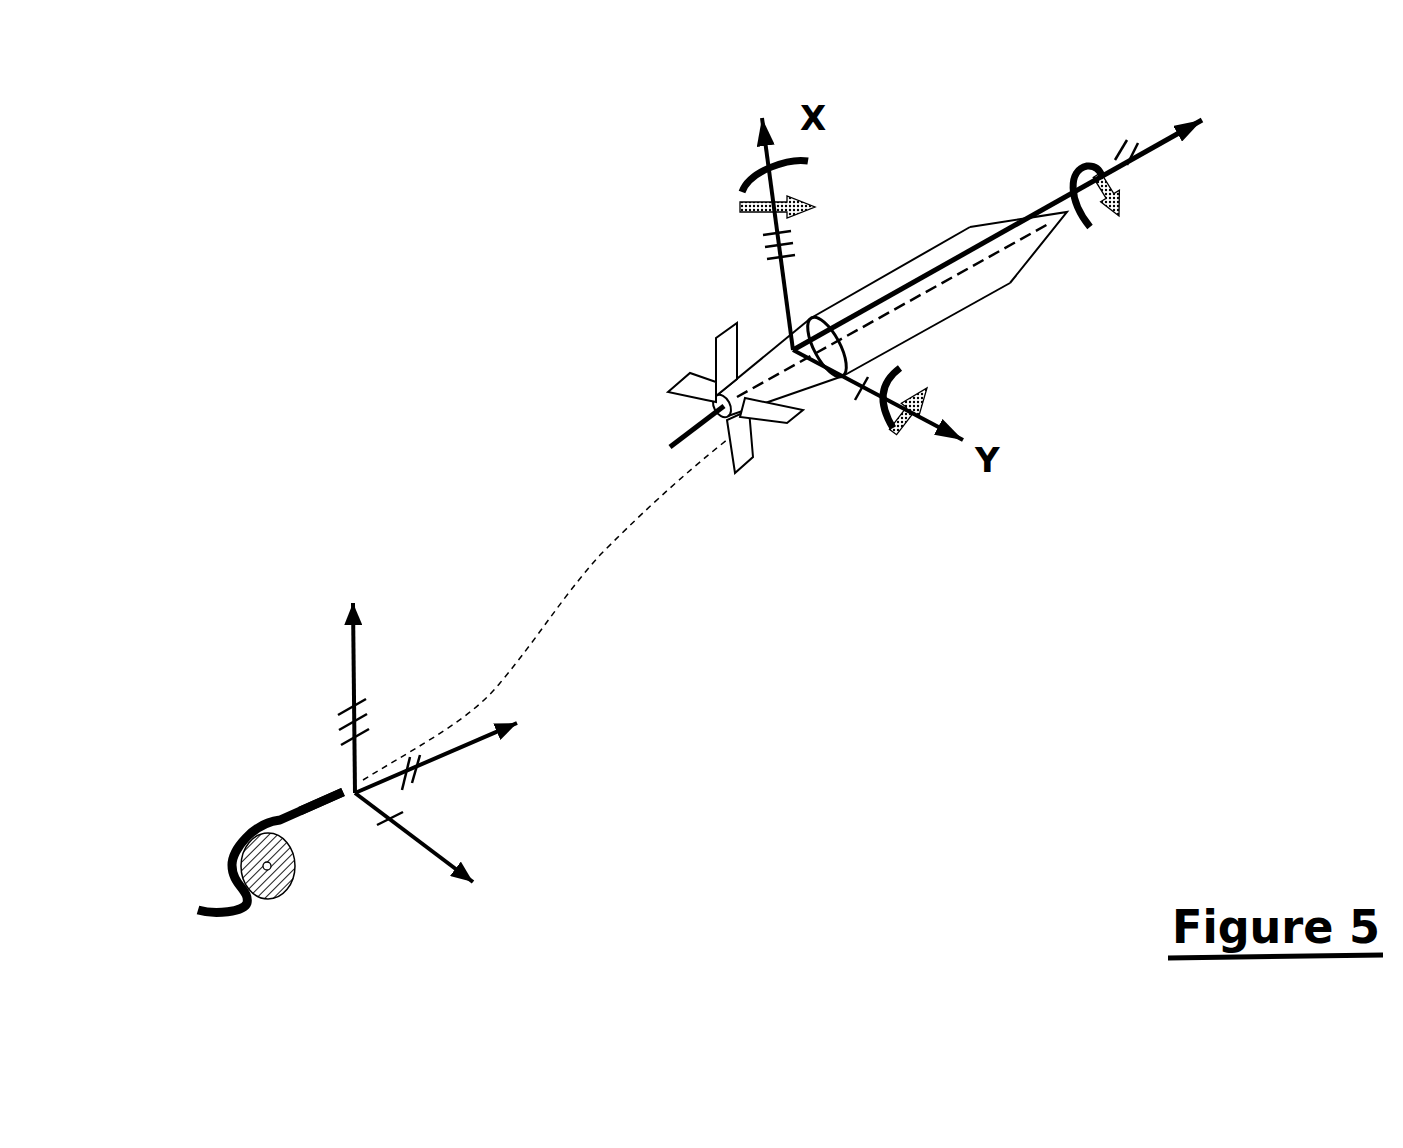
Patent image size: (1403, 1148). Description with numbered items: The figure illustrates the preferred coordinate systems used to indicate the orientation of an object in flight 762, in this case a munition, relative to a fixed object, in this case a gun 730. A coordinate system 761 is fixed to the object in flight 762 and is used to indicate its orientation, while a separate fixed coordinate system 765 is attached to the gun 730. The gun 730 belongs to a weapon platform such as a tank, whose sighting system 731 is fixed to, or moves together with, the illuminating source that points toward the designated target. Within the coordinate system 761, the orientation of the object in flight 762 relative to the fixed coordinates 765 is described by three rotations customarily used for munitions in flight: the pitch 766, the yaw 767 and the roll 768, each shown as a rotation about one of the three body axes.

The gun 730 is at (237, 818).
The sighting system 731 is at (325, 793).
The coordinate system fixed to the object in flight 761 is at (1163, 123).
The object in flight 762 is at (988, 302).
The fixed coordinate system 765 is at (475, 763).
The pitch 766 is at (890, 547).
The yaw 767 is at (642, 200).
The roll 768 is at (1180, 308).